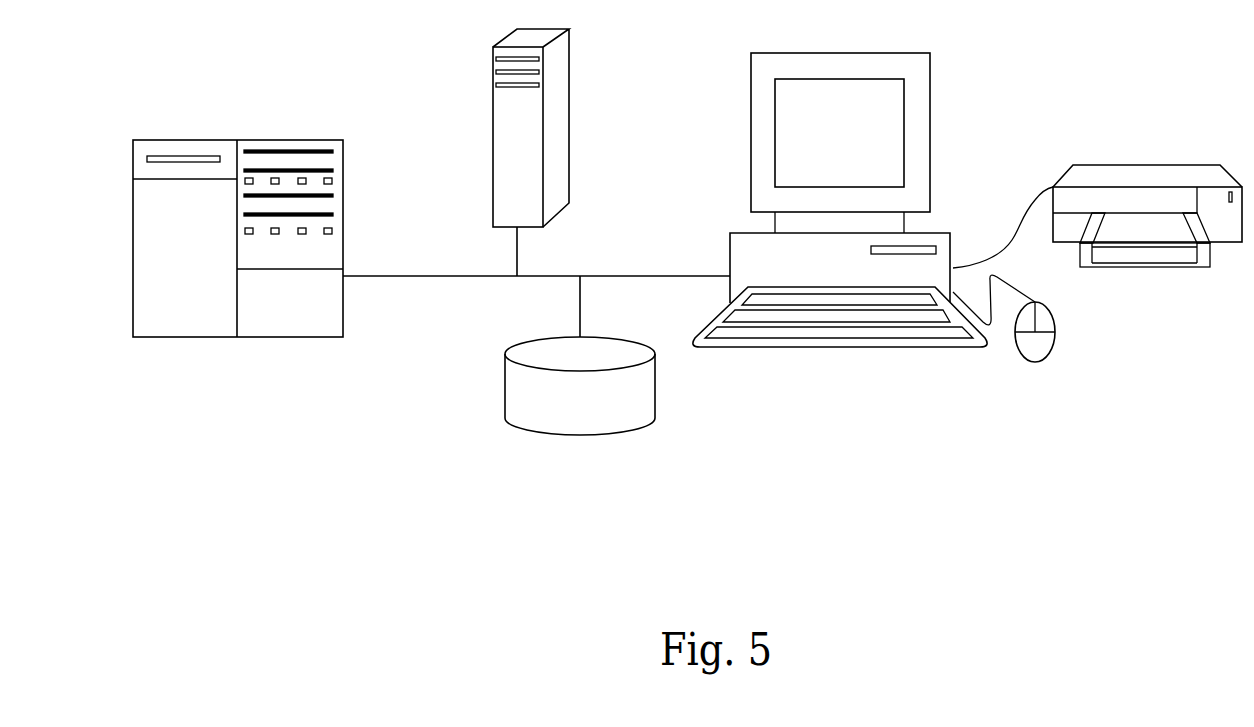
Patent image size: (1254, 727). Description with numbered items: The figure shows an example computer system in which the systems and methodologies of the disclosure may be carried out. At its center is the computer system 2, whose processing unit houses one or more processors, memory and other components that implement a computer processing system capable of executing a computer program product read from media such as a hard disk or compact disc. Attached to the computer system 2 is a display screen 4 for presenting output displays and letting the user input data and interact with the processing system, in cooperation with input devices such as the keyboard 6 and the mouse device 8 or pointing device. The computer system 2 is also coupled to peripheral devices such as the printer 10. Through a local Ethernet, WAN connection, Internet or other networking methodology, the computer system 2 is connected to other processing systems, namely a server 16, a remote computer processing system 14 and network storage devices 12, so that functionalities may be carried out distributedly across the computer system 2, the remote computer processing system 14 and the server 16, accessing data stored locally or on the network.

The computer system 2 is at (733, 257).
The display screen 4 is at (931, 128).
The keyboard 6 is at (898, 349).
The mouse device 8 is at (1055, 348).
The printer 10 is at (1147, 165).
The network storage devices 12 is at (600, 436).
The remote computer processing system 14 is at (569, 115).
The server 16 is at (281, 140).